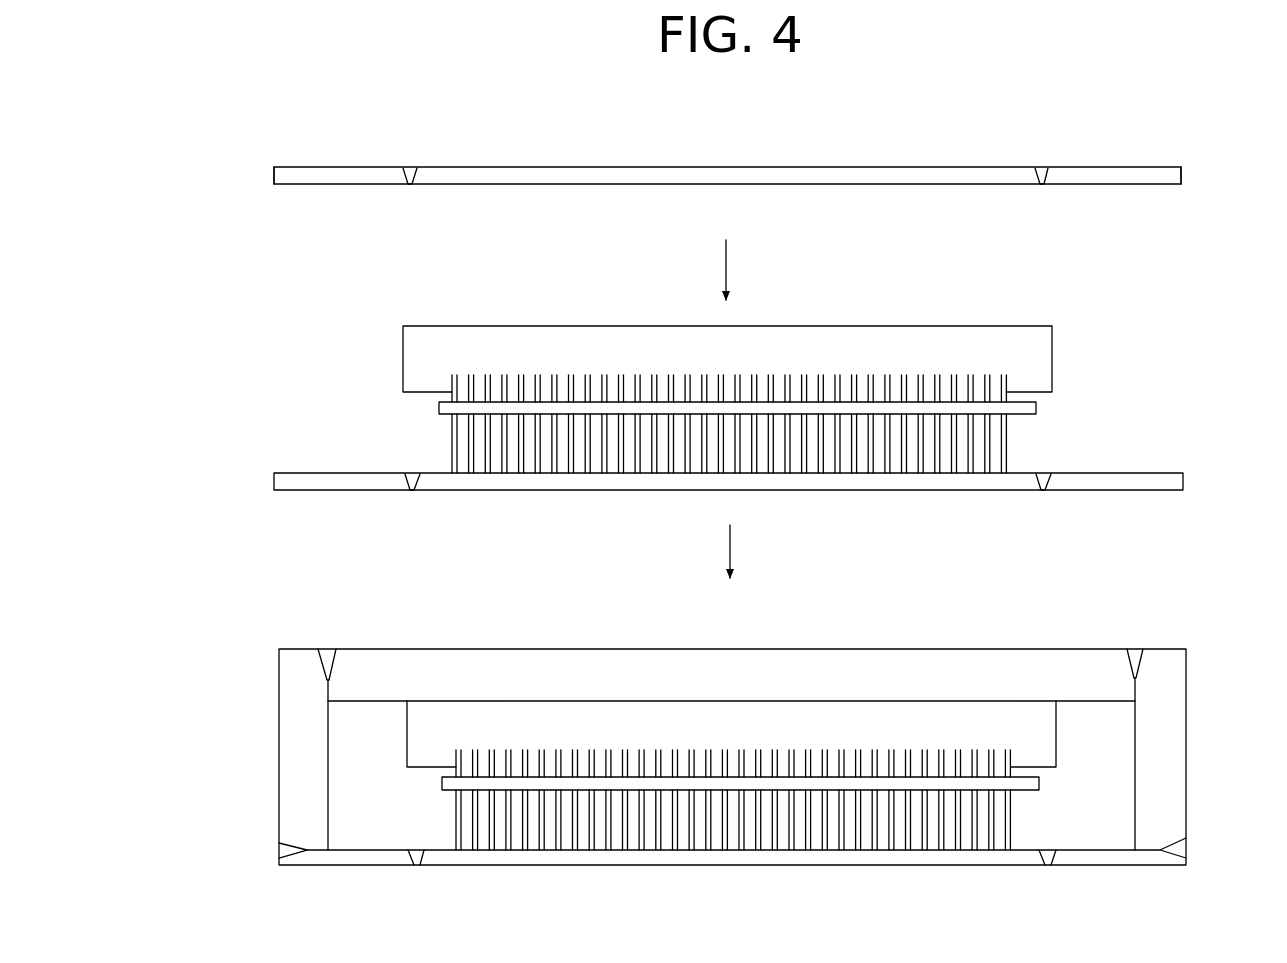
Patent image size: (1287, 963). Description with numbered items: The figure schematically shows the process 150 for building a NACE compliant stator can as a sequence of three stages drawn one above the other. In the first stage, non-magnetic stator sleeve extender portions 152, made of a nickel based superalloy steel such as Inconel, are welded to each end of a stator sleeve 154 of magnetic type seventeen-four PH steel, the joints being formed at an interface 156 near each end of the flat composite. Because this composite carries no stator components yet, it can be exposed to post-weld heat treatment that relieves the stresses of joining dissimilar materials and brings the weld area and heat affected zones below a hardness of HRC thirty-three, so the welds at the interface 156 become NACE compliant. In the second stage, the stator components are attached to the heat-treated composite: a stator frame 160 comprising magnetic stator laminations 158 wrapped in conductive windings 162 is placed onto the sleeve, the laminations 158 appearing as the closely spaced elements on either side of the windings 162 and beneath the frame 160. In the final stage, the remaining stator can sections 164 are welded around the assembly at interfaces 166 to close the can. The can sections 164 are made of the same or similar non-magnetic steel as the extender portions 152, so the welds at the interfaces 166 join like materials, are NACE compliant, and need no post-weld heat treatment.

The process 150 is at (214, 206).
The non-magnetic stator sleeve extender portions 152 is at (340, 185).
The stator sleeve 154 is at (735, 167).
The interface 156 is at (410, 167).
The magnetic stator laminations 158 is at (1005, 445).
The stator frame 160 is at (1053, 360).
The conductive windings 162 is at (438, 408).
The stator can sections 164 is at (950, 648).
The interfaces 166 is at (326, 648).